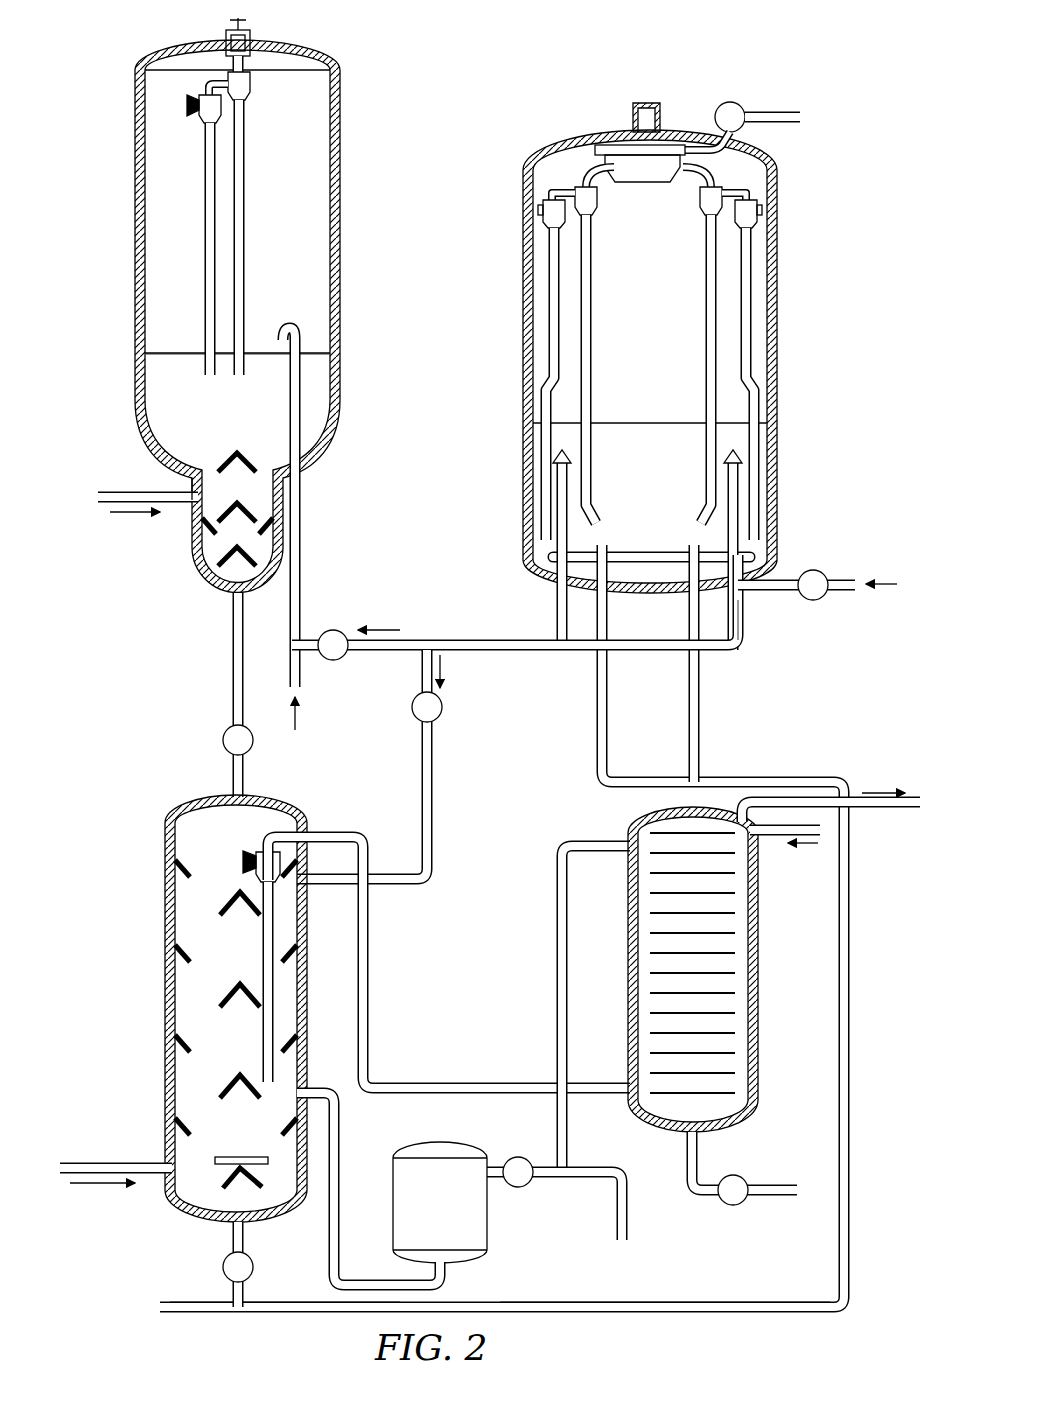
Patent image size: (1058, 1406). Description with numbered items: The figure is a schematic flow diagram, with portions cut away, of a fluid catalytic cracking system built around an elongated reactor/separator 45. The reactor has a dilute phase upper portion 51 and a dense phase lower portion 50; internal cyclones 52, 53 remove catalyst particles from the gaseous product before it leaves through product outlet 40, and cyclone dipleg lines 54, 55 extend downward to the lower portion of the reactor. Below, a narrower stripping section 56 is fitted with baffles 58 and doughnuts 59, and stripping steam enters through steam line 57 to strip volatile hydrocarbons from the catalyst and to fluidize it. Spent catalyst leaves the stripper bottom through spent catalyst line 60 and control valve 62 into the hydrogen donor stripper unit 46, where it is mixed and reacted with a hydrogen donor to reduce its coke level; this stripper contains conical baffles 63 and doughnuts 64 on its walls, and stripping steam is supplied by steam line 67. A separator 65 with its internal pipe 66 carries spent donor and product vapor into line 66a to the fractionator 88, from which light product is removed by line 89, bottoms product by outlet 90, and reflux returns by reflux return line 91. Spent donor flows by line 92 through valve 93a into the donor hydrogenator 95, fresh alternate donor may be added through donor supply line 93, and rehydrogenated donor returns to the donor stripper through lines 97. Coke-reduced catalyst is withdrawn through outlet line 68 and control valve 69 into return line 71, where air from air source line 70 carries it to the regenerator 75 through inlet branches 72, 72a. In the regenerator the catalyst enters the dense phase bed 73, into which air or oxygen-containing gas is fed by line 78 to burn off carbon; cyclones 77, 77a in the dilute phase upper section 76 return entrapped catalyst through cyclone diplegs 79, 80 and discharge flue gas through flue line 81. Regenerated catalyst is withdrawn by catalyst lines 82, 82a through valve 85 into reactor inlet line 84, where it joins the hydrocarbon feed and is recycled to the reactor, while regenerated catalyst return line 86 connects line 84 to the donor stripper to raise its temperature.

The product outlet 40 is at (248, 30).
The reactor/separator 45 is at (348, 150).
The hydrogen donor stripper unit 46 is at (165, 882).
The dense phase lower portion 50 is at (180, 362).
The dilute phase upper portion 51 is at (294, 222).
The internal cyclone 52 is at (198, 100).
The internal cyclone 53 is at (250, 85).
The cyclone dipleg line 54 is at (206, 232).
The cyclone dipleg line 55 is at (244, 257).
The stripping section 56 is at (190, 482).
The steam line 57 is at (106, 490).
The baffles 58 is at (235, 455).
The doughnuts 59 is at (215, 526).
The spent catalyst line 60 is at (232, 678).
The control valve 62 is at (232, 764).
The conical baffles 63 is at (232, 1003).
The doughnuts 64 is at (185, 1122).
The separator 65 is at (258, 852).
The pipe 66 is at (263, 942).
The line 66a is at (370, 962).
The steam line 67 is at (106, 1164).
The outlet line 68 is at (232, 1232).
The control valve 69 is at (223, 1266).
The air source line 70 is at (178, 1303).
The return line 71 is at (752, 1290).
The inlet branch 72 is at (608, 718).
The inlet branch 72a is at (700, 718).
The dense phase bed 73 is at (663, 469).
The regenerator 75 is at (778, 292).
The dilute phase upper section 76 is at (659, 281).
The cyclone 77 is at (555, 200).
The cyclone 77a is at (597, 205).
The line 78 is at (848, 583).
The cyclone dipleg 79 is at (556, 372).
The cyclone dipleg 80 is at (597, 372).
The flue line 81 is at (650, 102).
The catalyst line 82 is at (550, 558).
The catalyst line 82a is at (745, 618).
The reactor inlet line 84 is at (302, 602).
The valve 85 is at (342, 632).
The regenerated catalyst return line 86 is at (435, 768).
The fractionator 88 is at (759, 984).
The line 89 is at (868, 808).
The outlet 90 is at (700, 1172).
The reflux return line 91 is at (776, 838).
The line 92 is at (557, 990).
The donor supply line 93 is at (628, 1205).
The valve 93a is at (505, 1160).
The donor hydrogenator 95 is at (488, 1208).
The lines 97 is at (341, 1175).